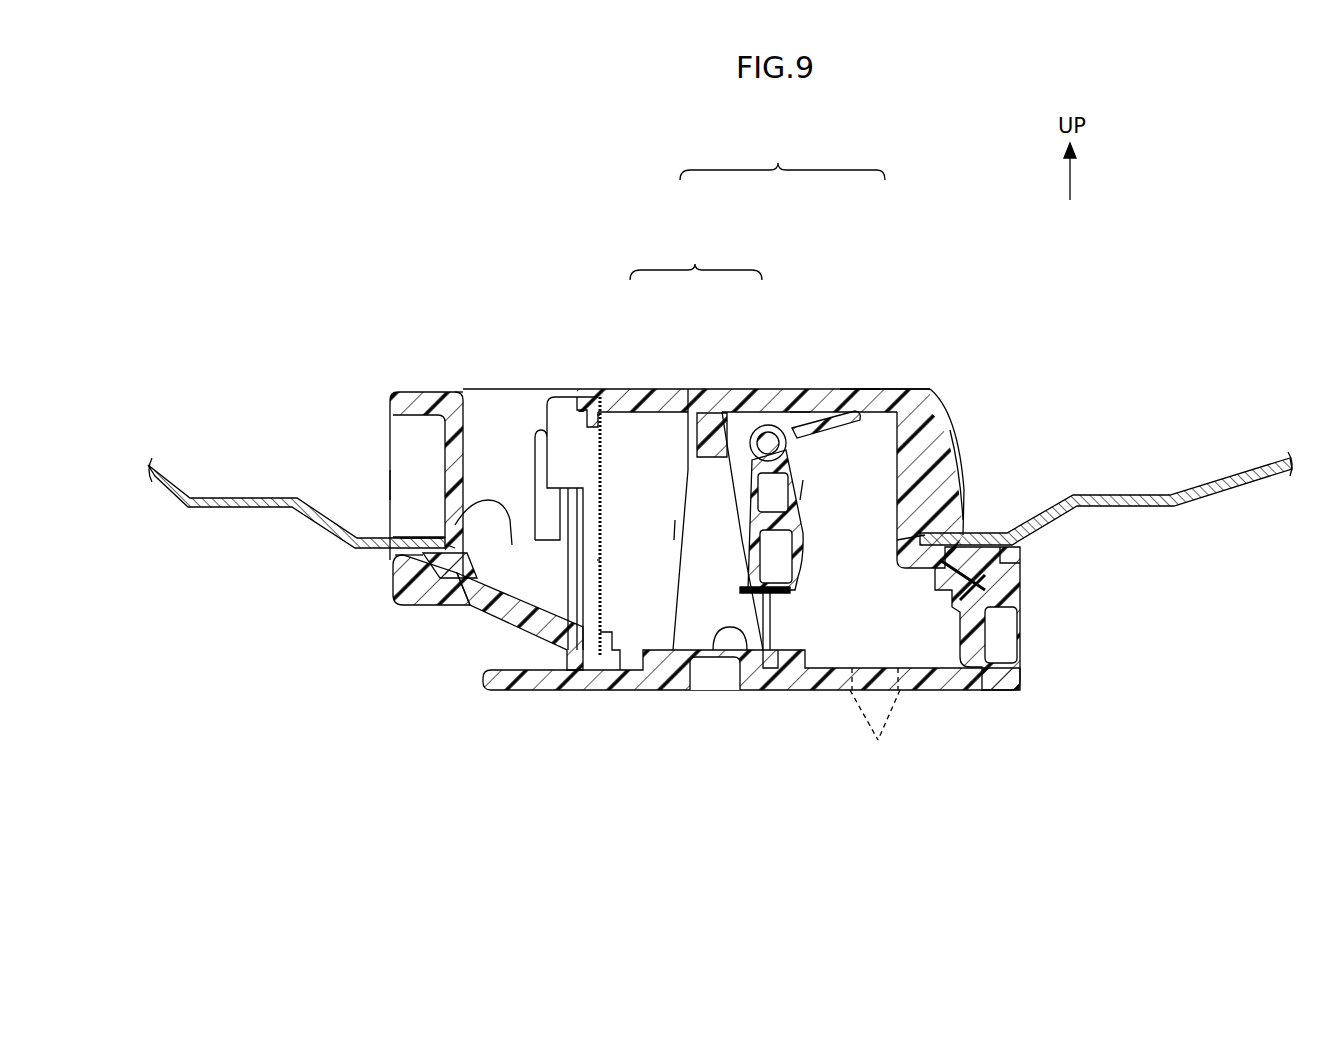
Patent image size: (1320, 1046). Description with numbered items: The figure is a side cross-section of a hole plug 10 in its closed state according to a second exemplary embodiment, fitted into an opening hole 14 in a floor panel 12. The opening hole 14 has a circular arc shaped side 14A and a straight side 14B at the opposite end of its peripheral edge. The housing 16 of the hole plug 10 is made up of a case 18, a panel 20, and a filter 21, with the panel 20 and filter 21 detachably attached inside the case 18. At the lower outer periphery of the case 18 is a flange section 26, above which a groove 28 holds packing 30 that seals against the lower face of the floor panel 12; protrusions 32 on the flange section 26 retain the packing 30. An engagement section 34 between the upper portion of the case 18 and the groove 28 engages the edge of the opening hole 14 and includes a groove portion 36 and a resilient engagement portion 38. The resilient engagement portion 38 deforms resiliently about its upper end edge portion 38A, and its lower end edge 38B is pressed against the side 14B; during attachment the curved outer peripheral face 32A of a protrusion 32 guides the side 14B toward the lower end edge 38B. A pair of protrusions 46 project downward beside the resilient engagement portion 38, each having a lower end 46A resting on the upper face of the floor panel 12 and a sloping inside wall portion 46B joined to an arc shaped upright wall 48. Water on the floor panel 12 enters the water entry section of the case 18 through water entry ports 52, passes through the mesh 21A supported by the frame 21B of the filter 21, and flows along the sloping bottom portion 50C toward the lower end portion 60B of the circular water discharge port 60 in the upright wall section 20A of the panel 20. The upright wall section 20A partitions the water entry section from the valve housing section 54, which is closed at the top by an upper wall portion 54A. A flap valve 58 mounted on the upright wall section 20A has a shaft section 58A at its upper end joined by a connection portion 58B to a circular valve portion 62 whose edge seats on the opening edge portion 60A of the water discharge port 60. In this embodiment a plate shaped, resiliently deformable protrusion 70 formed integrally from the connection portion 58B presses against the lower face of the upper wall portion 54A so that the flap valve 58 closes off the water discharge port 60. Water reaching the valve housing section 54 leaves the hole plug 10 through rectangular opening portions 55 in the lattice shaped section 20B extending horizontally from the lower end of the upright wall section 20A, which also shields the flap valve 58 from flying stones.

The hole plug 10 is at (968, 302).
The floor panel 12 is at (1190, 475).
The opening hole 14 is at (920, 527).
The side of opening hole 14A is at (918, 536).
The side of opening hole 14B is at (450, 530).
The housing 16 is at (696, 260).
The case 18 is at (805, 378).
The panel 20 is at (675, 505).
The upright wall section 20A is at (672, 530).
The lattice shaped section 20B is at (942, 692).
The filter 21 is at (625, 380).
The mesh 21A is at (604, 552).
The frame 21B is at (604, 418).
The flange section 26 is at (1032, 610).
The groove 28 is at (945, 572).
The packing 30 is at (1012, 560).
The protrusion 32 is at (392, 580).
The outer peripheral face 32A is at (398, 565).
The engagement section 34 is at (782, 159).
The groove portion 36 is at (988, 529).
The resilient engagement portion 38 is at (466, 412).
The upper end edge portion 38A is at (460, 385).
The lower end edge 38B is at (480, 540).
The protrusion 46 is at (388, 480).
The lower end 46A is at (395, 530).
The inside wall portion 46B is at (392, 488).
The upright wall 48 is at (483, 492).
The bottom portion of water entry section 50C is at (530, 612).
The water entry port 52 is at (545, 420).
The valve housing section 54 is at (898, 388).
The upper wall portion 54A is at (858, 380).
The opening portion 55 is at (875, 720).
The flap valve 58 is at (818, 512).
The shaft section 58A is at (769, 432).
The connection portion 58B is at (805, 462).
The water discharge port 60 is at (765, 590).
The opening edge portion 60A is at (775, 640).
The lower end portion 60B is at (722, 630).
The valve portion 62 is at (775, 622).
The protrusion 70 is at (840, 430).